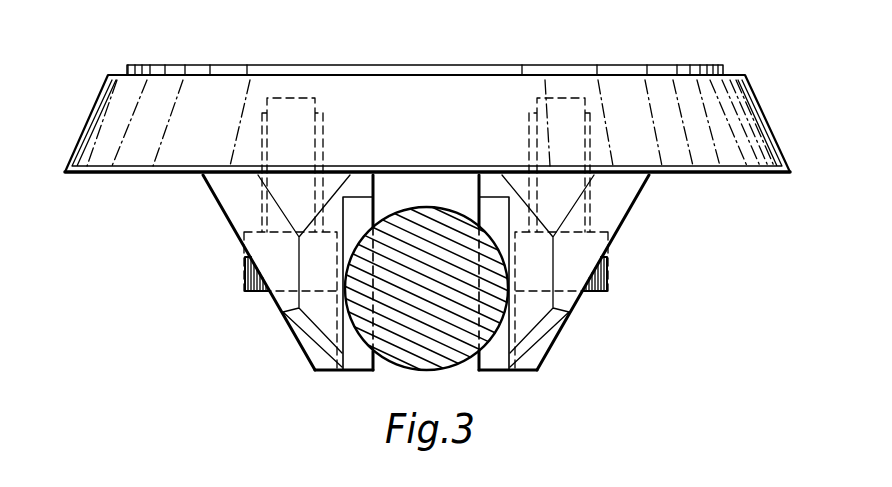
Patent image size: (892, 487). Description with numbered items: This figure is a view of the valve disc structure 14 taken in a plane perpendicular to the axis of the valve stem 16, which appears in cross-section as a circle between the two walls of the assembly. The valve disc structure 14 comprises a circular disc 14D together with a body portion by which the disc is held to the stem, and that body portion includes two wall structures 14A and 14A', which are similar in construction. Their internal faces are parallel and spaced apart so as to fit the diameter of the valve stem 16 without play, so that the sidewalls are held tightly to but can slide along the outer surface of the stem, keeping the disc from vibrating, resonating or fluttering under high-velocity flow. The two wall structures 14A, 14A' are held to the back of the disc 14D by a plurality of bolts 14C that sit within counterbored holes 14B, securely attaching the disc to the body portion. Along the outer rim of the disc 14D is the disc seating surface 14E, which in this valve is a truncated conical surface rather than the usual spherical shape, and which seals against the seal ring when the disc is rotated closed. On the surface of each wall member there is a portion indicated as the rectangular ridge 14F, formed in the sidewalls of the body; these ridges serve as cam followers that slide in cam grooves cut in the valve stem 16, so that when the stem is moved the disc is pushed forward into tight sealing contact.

The valve disc structure 14 is at (143, 186).
The wall structure 14A is at (617, 272).
The wall structure 14A' is at (241, 272).
The counterbored holes 14B is at (338, 323).
The bolts 14C is at (244, 270).
The circular disc 14D is at (188, 176).
The disc seating surface 14E is at (96, 102).
The rectangular ridges 14F is at (360, 358).
The valve stem 16 is at (446, 342).